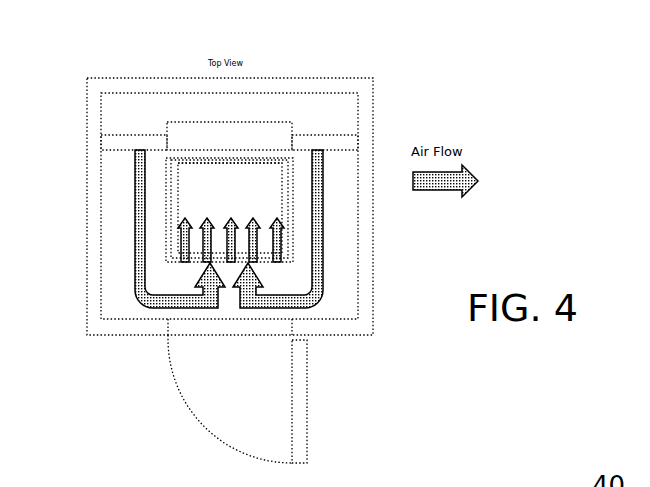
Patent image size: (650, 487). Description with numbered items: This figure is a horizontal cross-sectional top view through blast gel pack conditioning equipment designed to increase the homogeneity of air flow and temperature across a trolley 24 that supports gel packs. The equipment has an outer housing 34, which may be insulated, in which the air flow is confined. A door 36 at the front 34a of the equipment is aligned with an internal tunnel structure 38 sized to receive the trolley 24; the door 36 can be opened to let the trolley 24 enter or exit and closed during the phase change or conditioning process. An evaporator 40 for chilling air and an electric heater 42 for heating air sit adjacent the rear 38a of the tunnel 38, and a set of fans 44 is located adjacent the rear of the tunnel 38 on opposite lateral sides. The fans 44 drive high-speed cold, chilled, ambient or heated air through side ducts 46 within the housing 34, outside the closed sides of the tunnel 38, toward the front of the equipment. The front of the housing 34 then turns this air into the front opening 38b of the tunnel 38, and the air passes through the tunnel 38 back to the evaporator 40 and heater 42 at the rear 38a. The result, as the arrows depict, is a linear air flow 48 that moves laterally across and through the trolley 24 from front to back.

The trolley 24 is at (177, 163).
The outer housing 34 is at (373, 302).
The front 34a is at (328, 335).
The door 36 is at (300, 437).
The tunnel structure 38 is at (285, 228).
The rear of tunnel 38a is at (172, 162).
The front opening of tunnel 38b is at (178, 263).
The evaporator 40 is at (237, 121).
The electric heater 42 is at (290, 136).
The fans 44 is at (110, 141).
The side ducts 46 is at (112, 249).
The linear air flow 48 is at (231, 262).